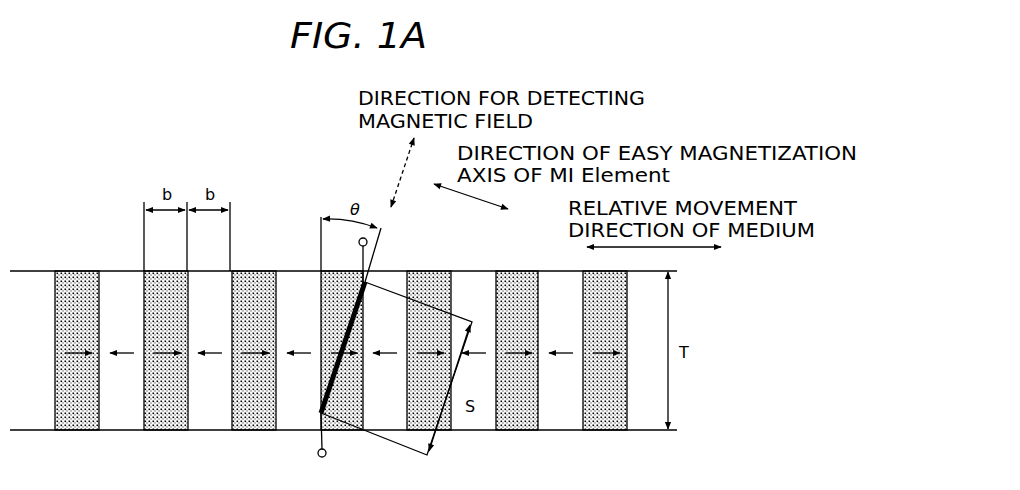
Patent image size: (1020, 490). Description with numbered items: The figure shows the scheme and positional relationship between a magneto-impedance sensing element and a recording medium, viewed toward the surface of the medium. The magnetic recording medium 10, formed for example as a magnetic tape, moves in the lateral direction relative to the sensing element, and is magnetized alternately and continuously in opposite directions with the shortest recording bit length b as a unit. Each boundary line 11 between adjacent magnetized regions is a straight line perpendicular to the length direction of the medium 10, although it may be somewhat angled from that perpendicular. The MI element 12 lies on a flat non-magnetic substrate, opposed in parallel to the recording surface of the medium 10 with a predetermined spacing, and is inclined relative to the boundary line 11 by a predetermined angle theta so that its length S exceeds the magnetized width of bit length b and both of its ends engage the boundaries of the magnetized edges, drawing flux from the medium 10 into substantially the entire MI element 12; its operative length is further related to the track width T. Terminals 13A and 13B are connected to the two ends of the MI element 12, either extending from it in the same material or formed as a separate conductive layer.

The magnetic recording medium 10 is at (68, 280).
The boundary line 11 is at (232, 392).
The MI element 12 is at (347, 322).
The terminal 13A is at (367, 242).
The terminal 13B is at (318, 454).